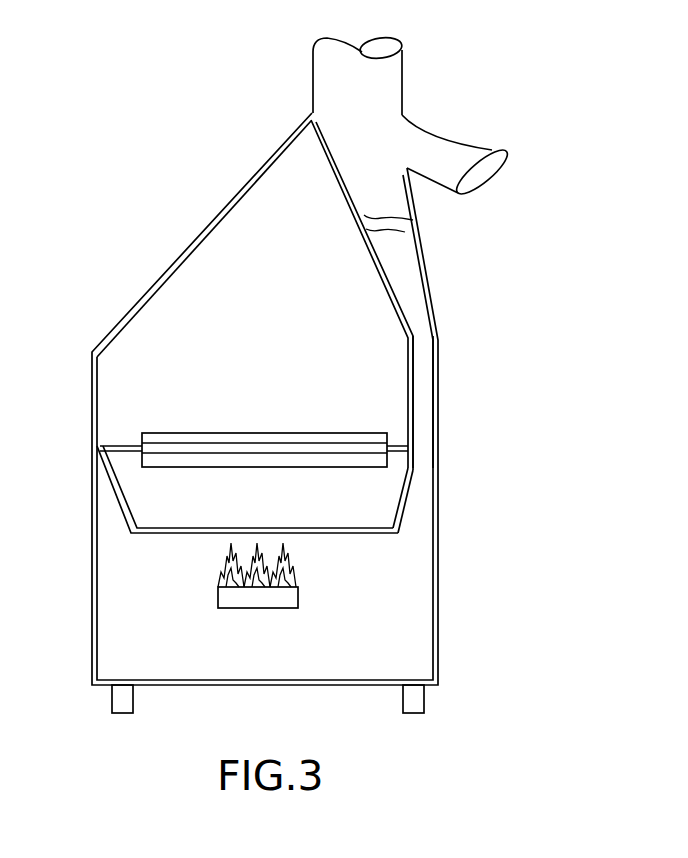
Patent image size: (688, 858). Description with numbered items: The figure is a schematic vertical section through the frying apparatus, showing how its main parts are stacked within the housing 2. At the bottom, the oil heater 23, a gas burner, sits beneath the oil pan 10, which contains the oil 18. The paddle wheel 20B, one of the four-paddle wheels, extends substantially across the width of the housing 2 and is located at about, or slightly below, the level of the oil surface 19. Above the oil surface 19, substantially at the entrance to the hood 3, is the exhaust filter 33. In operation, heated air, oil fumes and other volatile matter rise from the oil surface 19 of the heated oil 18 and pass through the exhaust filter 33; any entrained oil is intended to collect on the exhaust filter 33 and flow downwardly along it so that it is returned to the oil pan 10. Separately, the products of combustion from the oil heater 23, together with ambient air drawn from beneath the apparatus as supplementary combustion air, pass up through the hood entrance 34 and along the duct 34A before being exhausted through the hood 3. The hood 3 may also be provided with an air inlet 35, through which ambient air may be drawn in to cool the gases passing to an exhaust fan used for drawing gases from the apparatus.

The housing 2 is at (187, 246).
The hood 3 is at (388, 77).
The air inlet 35 is at (487, 148).
The exhaust filter 33 is at (413, 221).
The hood entrance 34 is at (418, 343).
The duct 34A is at (422, 405).
The oil pan 10 is at (400, 515).
The oil 18 is at (388, 497).
The oil surface 19 is at (118, 445).
The paddle wheel 20B is at (233, 433).
The oil heater 23 is at (260, 608).